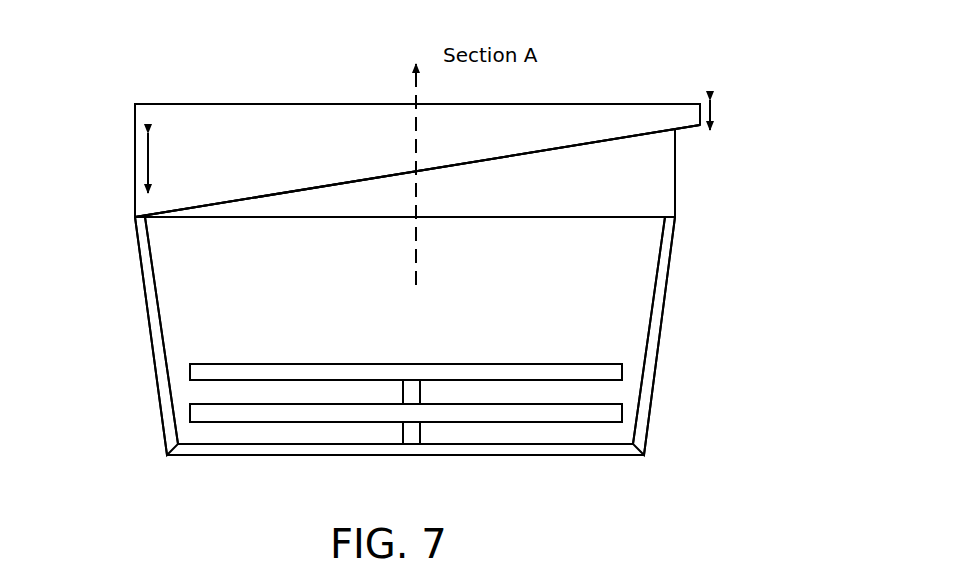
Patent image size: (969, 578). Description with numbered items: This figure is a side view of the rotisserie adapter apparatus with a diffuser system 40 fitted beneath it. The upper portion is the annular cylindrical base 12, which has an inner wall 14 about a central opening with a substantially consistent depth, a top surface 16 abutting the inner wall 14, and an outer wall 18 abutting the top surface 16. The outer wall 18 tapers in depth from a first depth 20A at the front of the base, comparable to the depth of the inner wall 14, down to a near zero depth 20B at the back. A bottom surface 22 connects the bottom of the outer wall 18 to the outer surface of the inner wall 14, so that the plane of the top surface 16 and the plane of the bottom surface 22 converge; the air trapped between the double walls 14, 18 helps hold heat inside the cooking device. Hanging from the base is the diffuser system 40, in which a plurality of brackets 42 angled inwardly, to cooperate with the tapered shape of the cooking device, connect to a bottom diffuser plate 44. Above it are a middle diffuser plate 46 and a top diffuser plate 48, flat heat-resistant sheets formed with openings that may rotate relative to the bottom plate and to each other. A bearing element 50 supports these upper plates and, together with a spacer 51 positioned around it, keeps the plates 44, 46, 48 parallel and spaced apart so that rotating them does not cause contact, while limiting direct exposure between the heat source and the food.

The annular cylindrical base 12 is at (135, 104).
The inner wall 14 is at (675, 195).
The top surface 16 is at (183, 103).
The outer wall 18 is at (135, 187).
The first depth 20A is at (175, 163).
The near zero depth 20B is at (738, 115).
The bottom surface 22 is at (540, 150).
The diffuser system 40 is at (692, 431).
The brackets 42 is at (150, 348).
The bottom diffuser plate 44 is at (318, 458).
The middle diffuser plate 46 is at (503, 403).
The top diffuser plate 48 is at (528, 363).
The bearing element 50 is at (420, 433).
The spacer 51 is at (420, 397).